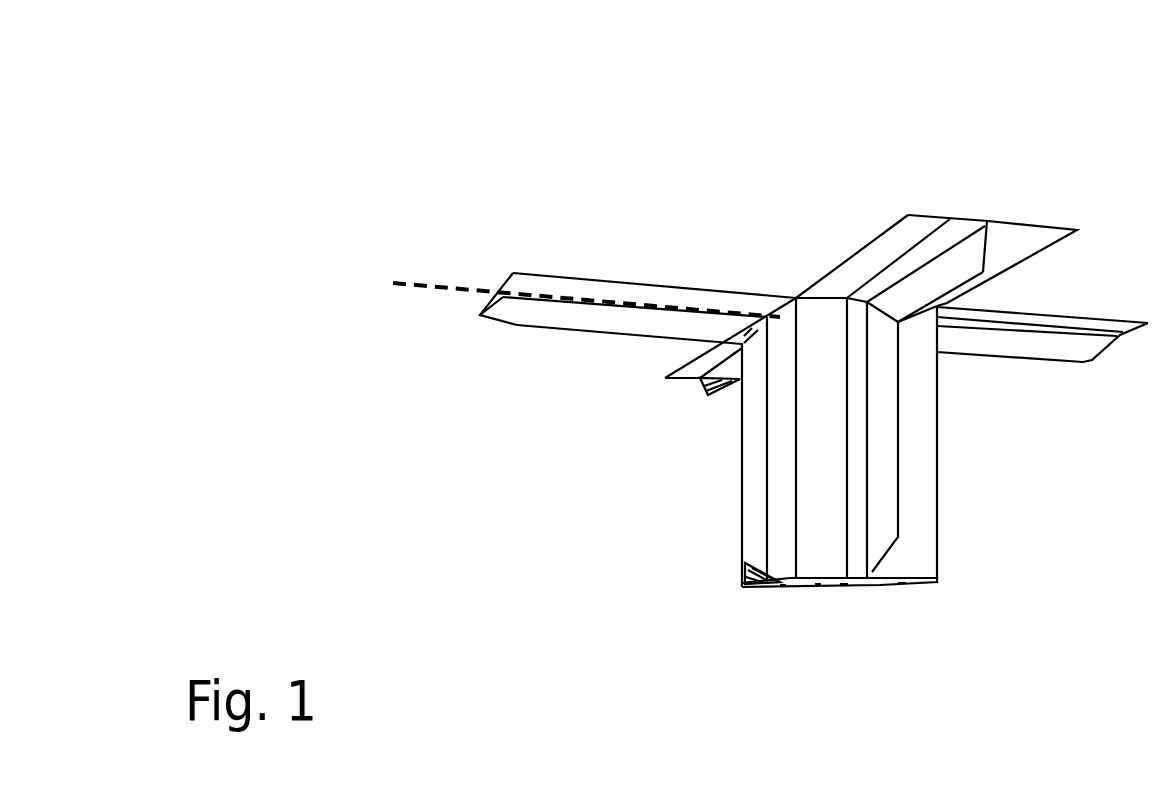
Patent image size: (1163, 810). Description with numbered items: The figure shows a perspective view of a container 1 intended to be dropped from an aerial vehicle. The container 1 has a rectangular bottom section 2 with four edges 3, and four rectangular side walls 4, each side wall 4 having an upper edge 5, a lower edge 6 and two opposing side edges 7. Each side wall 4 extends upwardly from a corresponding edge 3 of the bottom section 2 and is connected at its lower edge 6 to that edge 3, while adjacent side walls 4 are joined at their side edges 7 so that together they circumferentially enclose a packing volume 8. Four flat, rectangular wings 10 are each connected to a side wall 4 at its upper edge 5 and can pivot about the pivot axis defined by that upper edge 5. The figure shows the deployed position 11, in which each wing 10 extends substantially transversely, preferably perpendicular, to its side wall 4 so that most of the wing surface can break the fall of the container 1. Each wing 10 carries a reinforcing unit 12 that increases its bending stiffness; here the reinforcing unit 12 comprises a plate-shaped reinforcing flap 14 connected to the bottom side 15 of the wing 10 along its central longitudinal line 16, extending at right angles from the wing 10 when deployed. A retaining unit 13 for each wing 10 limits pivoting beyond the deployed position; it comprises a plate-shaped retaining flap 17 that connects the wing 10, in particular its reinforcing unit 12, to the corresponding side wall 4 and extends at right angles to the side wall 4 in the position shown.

The container 1 is at (713, 163).
The bottom section 2 is at (818, 591).
The edges 3 is at (783, 586).
The side wall 4 is at (752, 577).
The upper edge 5 is at (818, 303).
The lower edge 6 is at (817, 578).
The side edges 7 is at (795, 465).
The packing volume 8 is at (924, 428).
The wing 10 is at (610, 270).
The deployed position 11 is at (718, 240).
The reinforcing unit 12 is at (560, 330).
The retaining unit 13 is at (746, 512).
The reinforcing flap 14 is at (607, 327).
The bottom side 15 is at (497, 302).
The central longitudinal line 16 is at (460, 283).
The retaining flap 17 is at (887, 470).